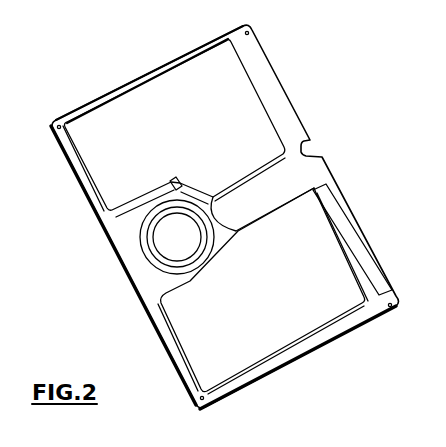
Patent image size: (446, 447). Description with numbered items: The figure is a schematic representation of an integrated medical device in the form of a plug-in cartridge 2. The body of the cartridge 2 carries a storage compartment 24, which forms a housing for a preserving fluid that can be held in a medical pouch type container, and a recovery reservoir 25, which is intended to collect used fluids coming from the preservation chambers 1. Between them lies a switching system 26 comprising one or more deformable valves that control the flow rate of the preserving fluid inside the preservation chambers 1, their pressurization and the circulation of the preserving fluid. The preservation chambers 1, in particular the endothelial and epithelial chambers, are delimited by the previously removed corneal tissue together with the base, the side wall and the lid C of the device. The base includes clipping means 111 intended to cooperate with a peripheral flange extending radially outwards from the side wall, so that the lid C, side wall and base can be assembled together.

The cartridge 2 is at (110, 60).
The storage compartment 24 is at (168, 113).
The recovery reservoir 25 is at (211, 421).
The switching system 26 is at (302, 170).
The clipping means 111 is at (148, 215).
The preservation chamber 1 is at (138, 277).
The lid C is at (197, 225).